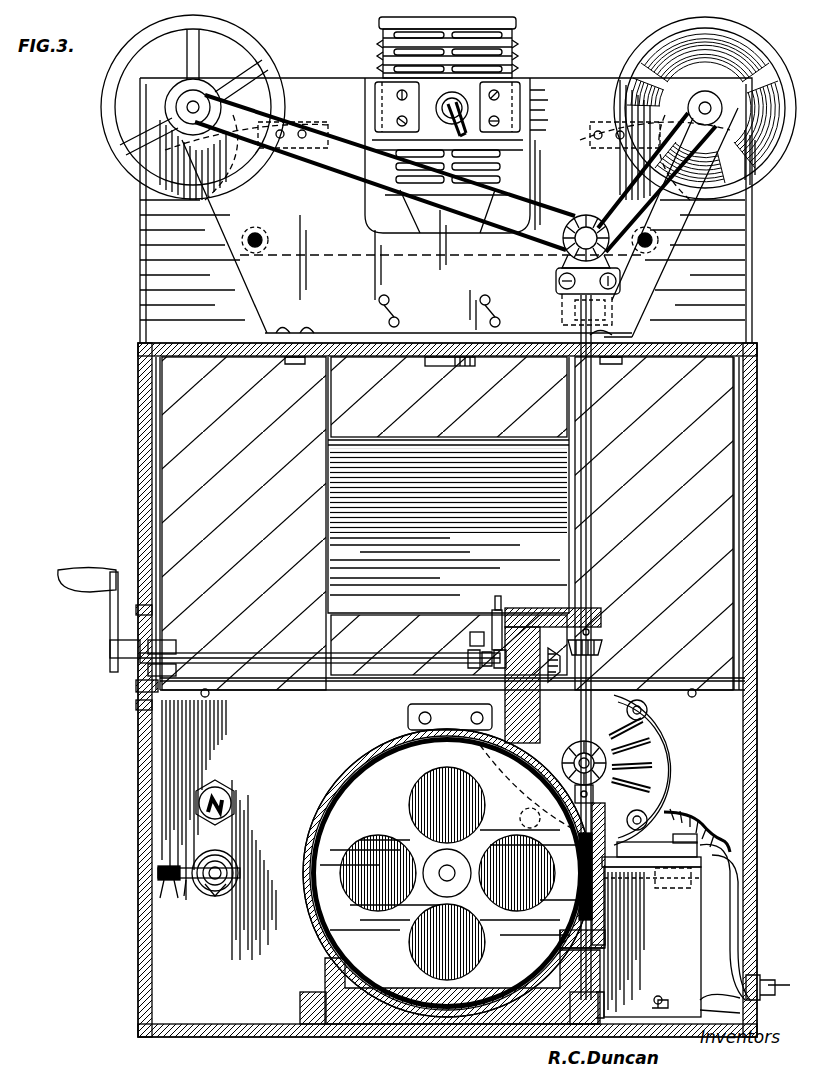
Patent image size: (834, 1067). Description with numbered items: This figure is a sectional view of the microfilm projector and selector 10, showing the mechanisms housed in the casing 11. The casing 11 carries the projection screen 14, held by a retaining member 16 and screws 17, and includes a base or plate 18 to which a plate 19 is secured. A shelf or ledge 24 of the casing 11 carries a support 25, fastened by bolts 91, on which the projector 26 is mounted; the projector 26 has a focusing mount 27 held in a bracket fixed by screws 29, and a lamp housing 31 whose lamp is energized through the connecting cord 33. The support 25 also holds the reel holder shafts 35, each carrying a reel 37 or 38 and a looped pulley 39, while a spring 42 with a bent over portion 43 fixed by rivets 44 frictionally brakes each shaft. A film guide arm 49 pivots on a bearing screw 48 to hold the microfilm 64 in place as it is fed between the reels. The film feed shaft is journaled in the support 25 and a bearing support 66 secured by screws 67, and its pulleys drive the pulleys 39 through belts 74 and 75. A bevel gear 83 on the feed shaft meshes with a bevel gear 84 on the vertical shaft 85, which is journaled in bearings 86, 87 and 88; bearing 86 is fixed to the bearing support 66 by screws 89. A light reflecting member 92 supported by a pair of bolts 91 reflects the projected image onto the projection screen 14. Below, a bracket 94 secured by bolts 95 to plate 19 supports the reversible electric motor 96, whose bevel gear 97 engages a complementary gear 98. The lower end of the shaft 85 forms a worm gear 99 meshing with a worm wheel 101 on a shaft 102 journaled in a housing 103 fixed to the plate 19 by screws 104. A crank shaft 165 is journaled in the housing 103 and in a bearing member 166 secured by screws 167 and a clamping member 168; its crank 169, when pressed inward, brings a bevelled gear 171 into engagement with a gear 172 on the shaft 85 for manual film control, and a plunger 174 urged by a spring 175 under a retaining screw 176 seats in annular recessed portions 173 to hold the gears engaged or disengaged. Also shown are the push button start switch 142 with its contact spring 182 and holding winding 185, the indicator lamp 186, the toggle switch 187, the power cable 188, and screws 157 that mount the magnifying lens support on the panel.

The microfilm projector and selector 10 is at (128, 425).
The casing 11 is at (137, 818).
The projection screen 14 is at (190, 478).
The retaining member 16 is at (313, 692).
The screws 17 is at (162, 386).
The base or plate 18 is at (414, 1037).
The plate 19 is at (310, 1022).
The shelf or ledge 24 is at (232, 342).
The support 25 is at (248, 282).
The projector 26 is at (527, 77).
The focusing mount 27 is at (474, 366).
The screws 29 is at (432, 311).
The lamp housing 31 is at (380, 34).
The connecting cord 33 is at (470, 118).
The reel holder shafts 35 is at (198, 104).
The reel 37 is at (768, 160).
The reel 38 is at (105, 82).
The looped pulley 39 is at (186, 103).
The spring 42 is at (236, 138).
The bent over portion 43 is at (304, 140).
The rivets 44 is at (302, 138).
The bearing screw 48 is at (258, 232).
The film guide arm 49 is at (462, 231).
The microfilm 64 is at (442, 270).
The bearing support 66 is at (560, 304).
The screws 67 is at (580, 322).
The belt 74 is at (606, 190).
The belt 75 is at (342, 138).
The bevel gear 83 is at (596, 228).
The bevel gear 84 is at (568, 258).
The shaft 85 is at (592, 528).
The bearing 86 is at (560, 288).
The bearing 87 is at (602, 610).
The bearing 88 is at (598, 812).
The screws 89 is at (560, 276).
The bolts 91 is at (306, 330).
The light reflecting member 92 is at (458, 455).
The bracket 94 is at (690, 925).
The bolts 95 is at (664, 998).
The reversible electric motor 96 is at (674, 760).
The bevel gear 97 is at (600, 752).
The gear 98 is at (572, 760).
The worm gear 99 is at (598, 900).
The worm wheel 101 is at (340, 790).
The shaft 102 is at (444, 876).
The housing 103 is at (352, 760).
The screws 104 is at (316, 992).
The push button start switch 142 is at (246, 864).
The screws 157 is at (450, 717).
The shaft 165 is at (304, 652).
The bearing member 166 is at (170, 640).
The screws 167 is at (134, 612).
The clamping member 168 is at (134, 686).
The crank 169 is at (112, 632).
The bevelled gear 171 is at (556, 684).
The gear 172 is at (604, 645).
The annular recessed portions 173 is at (484, 668).
The plunger 174 is at (472, 640).
The spring 175 is at (490, 624).
The retaining screw 176 is at (498, 596).
The contact spring 182 is at (242, 873).
The winding 185 is at (218, 898).
The lamp 186 is at (224, 790).
The toggle switch 187 is at (676, 874).
The cable 188 is at (776, 985).